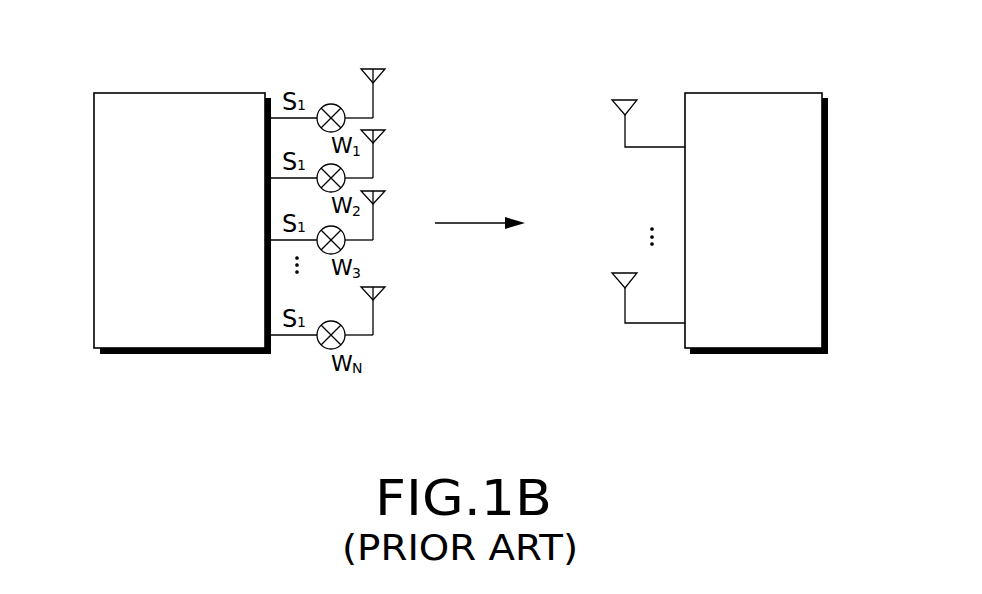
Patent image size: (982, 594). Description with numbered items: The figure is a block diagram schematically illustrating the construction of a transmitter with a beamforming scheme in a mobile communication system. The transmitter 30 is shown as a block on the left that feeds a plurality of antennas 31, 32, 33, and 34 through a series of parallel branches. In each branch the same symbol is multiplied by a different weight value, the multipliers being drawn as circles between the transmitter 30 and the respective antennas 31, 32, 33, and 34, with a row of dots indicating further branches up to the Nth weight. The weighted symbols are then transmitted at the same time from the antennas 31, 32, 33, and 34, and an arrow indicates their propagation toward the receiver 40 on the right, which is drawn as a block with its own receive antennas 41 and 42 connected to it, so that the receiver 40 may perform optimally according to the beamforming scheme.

The transmitter 30 is at (178, 93).
The antenna 31 is at (386, 74).
The antenna 32 is at (386, 134).
The antenna 33 is at (386, 195).
The antenna 34 is at (386, 291).
The receiver 40 is at (752, 93).
The receive antenna 41 is at (611, 106).
The receive antenna 42 is at (611, 281).